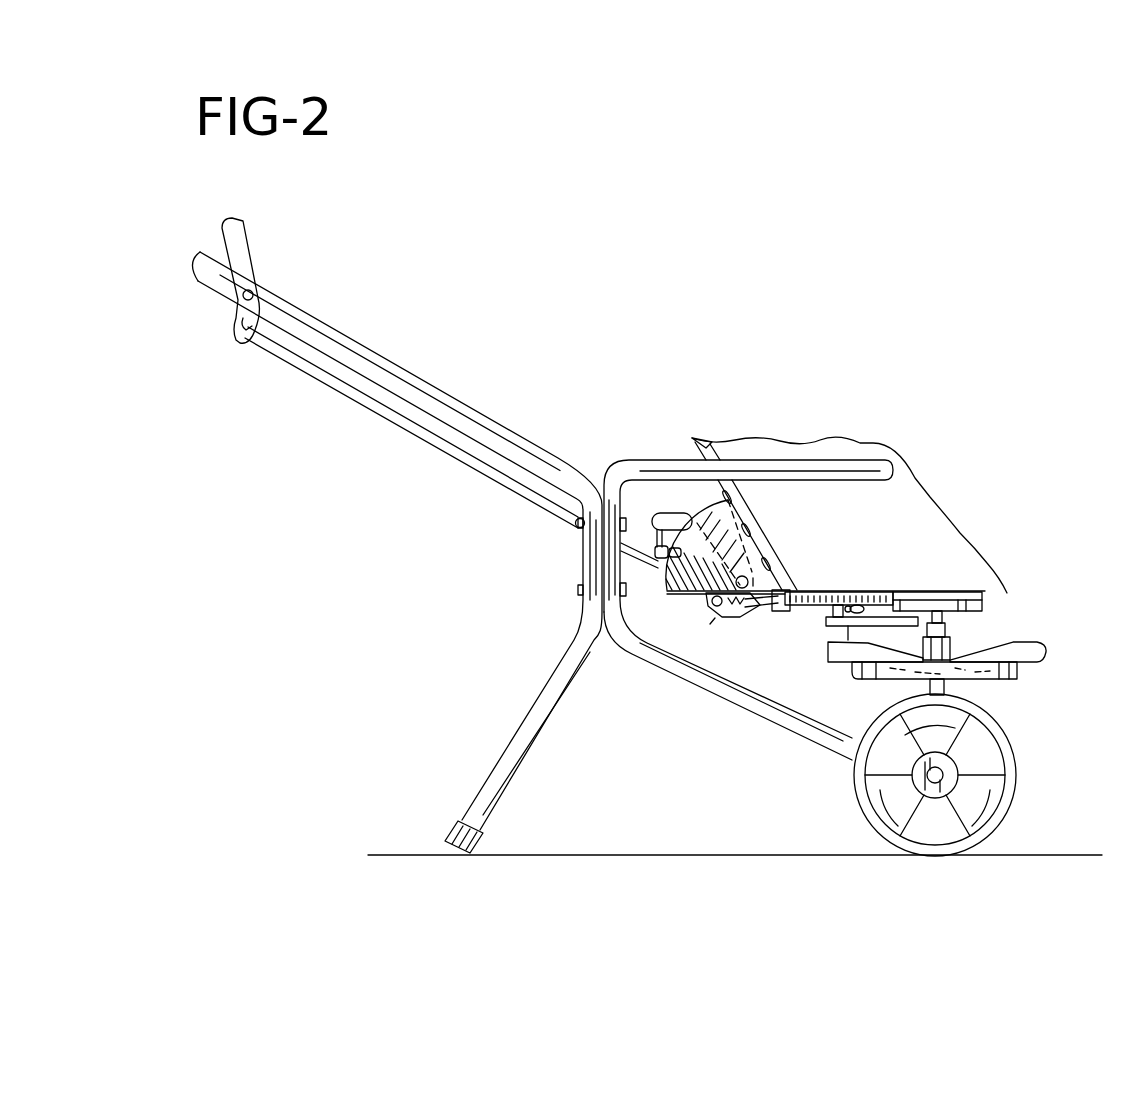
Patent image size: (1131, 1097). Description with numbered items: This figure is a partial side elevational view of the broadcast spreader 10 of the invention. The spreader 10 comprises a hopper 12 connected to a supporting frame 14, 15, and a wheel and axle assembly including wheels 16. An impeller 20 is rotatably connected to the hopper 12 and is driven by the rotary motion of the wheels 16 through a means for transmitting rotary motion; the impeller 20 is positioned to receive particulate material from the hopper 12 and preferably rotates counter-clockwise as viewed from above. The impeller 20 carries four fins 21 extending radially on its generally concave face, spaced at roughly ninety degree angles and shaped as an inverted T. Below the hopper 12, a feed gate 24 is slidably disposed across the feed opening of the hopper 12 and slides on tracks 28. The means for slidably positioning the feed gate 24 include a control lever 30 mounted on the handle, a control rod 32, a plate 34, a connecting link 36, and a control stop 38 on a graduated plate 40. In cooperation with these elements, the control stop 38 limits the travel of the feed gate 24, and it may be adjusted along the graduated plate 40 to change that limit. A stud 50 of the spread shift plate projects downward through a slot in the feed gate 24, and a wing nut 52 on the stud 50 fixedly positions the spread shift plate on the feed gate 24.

The broadcast spreader 10 is at (940, 455).
The hopper 12 is at (928, 503).
The supporting frame 14 is at (606, 603).
The supporting frame 15 is at (586, 553).
The wheels 16 is at (1017, 775).
The impeller 20 is at (994, 681).
The fins 21 is at (1030, 645).
The feed gate 24 is at (866, 596).
The tracks 28 is at (940, 593).
The control lever 30 is at (246, 244).
The control rod 32 is at (342, 390).
The plate 34 is at (708, 603).
The connecting link 36 is at (760, 607).
The control stop 38 is at (656, 548).
The graduated plate 40 is at (727, 527).
The stud 50 is at (846, 624).
The wing nut 52 is at (832, 612).